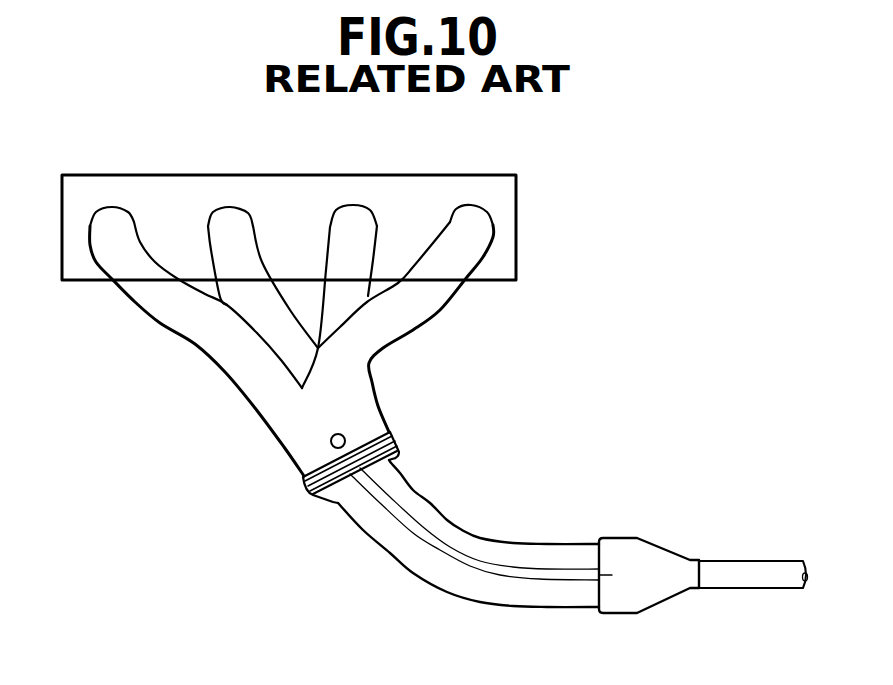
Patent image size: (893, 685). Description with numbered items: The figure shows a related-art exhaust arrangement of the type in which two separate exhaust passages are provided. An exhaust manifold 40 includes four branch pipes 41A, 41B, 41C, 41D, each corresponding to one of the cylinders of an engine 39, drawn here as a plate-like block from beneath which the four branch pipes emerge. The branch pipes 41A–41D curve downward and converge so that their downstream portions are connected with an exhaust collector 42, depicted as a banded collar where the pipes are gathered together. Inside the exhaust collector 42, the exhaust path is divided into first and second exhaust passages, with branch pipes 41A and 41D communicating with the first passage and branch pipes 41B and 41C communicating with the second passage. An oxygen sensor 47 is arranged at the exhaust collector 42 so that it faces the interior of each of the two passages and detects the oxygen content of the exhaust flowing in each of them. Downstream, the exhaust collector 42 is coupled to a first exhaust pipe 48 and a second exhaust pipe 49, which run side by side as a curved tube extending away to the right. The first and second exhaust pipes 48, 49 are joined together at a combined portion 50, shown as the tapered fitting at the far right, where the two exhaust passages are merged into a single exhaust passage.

The engine 39 is at (407, 192).
The exhaust manifold 40 is at (280, 368).
The branch pipe 41A is at (155, 292).
The branch pipe 41B is at (237, 265).
The branch pipe 41C is at (352, 253).
The branch pipe 41D is at (365, 327).
The exhaust collector 42 is at (306, 468).
The oxygen sensor 47 is at (345, 433).
The first exhaust pipe 48 is at (433, 570).
The second exhaust pipe 49 is at (482, 540).
The combined portion 50 is at (625, 547).